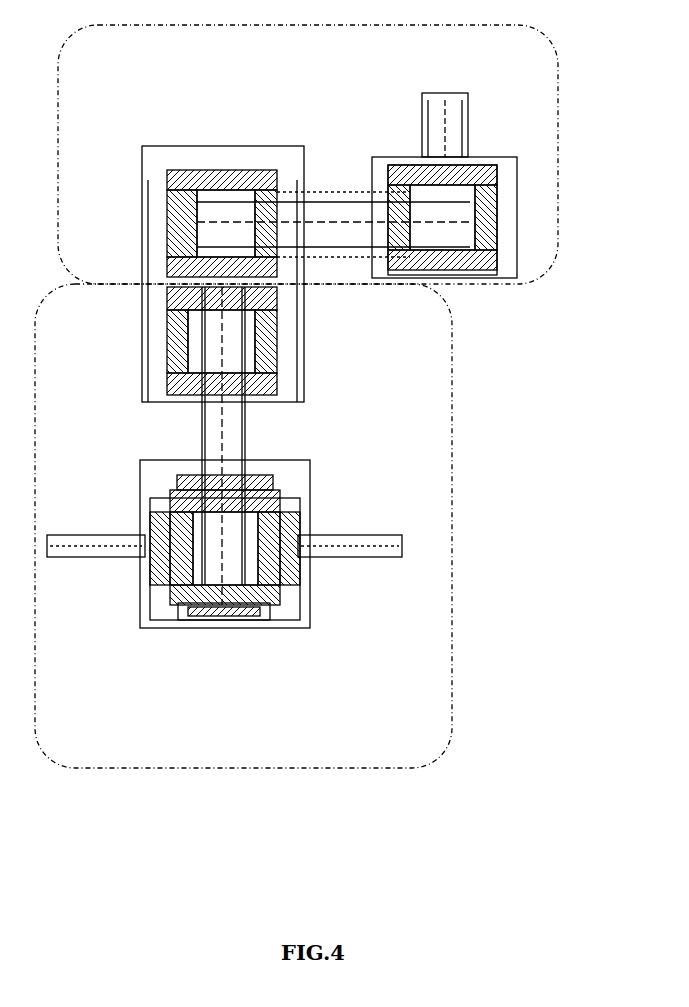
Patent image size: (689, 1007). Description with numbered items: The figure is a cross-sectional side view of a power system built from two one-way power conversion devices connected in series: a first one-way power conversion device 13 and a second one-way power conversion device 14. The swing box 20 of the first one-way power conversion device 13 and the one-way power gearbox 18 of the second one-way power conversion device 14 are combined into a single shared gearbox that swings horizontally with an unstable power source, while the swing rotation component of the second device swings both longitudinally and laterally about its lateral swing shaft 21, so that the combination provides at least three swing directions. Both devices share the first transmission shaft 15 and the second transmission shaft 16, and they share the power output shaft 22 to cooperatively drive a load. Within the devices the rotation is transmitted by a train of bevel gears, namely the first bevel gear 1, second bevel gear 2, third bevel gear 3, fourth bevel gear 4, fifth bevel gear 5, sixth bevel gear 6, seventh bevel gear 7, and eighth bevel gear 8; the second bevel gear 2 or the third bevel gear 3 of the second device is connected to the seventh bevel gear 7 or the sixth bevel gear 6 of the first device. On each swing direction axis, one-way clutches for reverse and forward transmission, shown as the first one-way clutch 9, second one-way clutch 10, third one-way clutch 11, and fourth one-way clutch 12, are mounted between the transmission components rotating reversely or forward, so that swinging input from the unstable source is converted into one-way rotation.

The first bevel gear 1 is at (318, 378).
The second bevel gear 2 is at (360, 234).
The third bevel gear 3 is at (396, 250).
The fourth bevel gear 4 is at (300, 247).
The fifth bevel gear 5 is at (278, 301).
The sixth bevel gear 6 is at (272, 326).
The seventh bevel gear 7 is at (186, 377).
The eighth bevel gear 8 is at (209, 381).
The first one-way clutch 9 is at (265, 302).
The second one-way clutch 10 is at (196, 412).
The third one-way clutch 11 is at (185, 560).
The fourth one-way clutch 12 is at (265, 568).
The first one-way power conversion device 13 is at (308, 186).
The second one-way power conversion device 14 is at (275, 526).
The first transmission shaft 15 is at (284, 295).
The second transmission shaft 16 is at (204, 378).
The one-way power gearbox 18 is at (444, 161).
The swing box 20 is at (238, 659).
The lateral swing shaft 21 is at (224, 528).
The power output shaft 22 is at (459, 111).